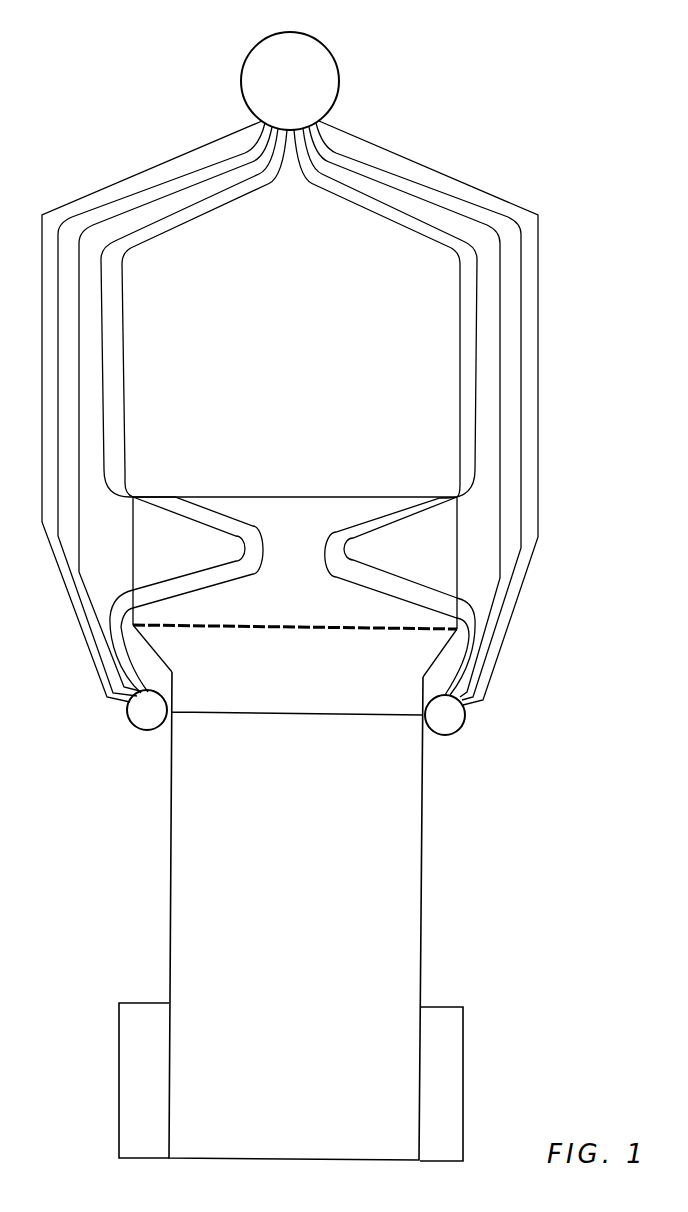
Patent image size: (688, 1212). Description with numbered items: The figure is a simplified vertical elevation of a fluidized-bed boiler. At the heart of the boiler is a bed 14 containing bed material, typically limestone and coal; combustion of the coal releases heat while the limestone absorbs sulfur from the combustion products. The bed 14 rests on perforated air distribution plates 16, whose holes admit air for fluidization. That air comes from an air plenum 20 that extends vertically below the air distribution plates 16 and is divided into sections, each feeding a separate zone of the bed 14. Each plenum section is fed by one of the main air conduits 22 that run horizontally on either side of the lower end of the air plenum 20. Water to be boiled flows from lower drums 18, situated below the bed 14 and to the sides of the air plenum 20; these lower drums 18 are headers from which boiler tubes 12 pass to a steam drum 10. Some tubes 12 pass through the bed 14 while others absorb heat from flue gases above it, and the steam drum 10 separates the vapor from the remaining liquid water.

The steam drum 10 is at (338, 69).
The boiler tubes 12 is at (103, 355).
The bed 14 is at (301, 539).
The air distribution plates 16 is at (292, 628).
The lower drums 18 is at (152, 731).
The air plenum 20 is at (296, 897).
The main air conduits 22 is at (119, 1018).